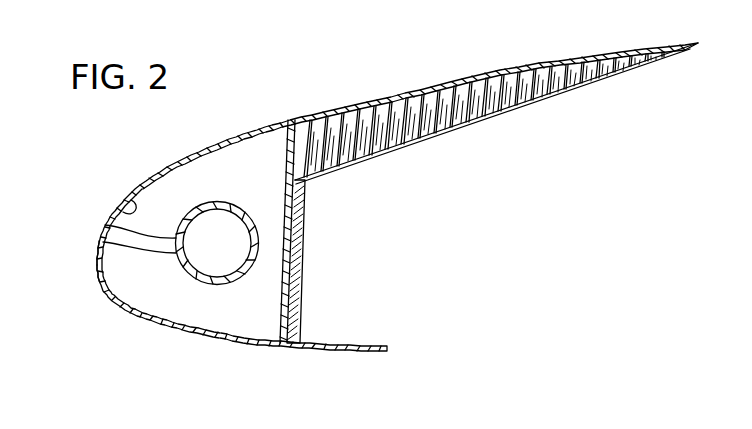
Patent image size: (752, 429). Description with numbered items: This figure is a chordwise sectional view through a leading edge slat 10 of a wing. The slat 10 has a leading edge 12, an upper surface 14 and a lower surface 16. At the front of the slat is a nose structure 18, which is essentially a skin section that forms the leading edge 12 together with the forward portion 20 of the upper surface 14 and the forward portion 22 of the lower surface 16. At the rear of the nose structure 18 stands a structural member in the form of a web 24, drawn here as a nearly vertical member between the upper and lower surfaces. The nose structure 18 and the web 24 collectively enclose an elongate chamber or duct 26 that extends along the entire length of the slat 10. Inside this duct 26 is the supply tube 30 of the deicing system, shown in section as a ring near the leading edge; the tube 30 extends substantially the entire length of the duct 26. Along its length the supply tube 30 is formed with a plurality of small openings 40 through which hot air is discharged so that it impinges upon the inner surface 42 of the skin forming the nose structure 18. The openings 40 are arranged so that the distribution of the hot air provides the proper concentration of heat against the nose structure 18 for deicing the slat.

The leading edge slat 10 is at (126, 159).
The leading edge 12 is at (97, 267).
The upper surface 14 is at (484, 69).
The lower surface 16 is at (257, 344).
The nose structure 18 is at (130, 189).
The forward portion of the upper surface 20 is at (269, 118).
The forward portion of the lower surface 22 is at (182, 331).
The web 24 is at (288, 168).
The duct 26 is at (130, 291).
The supply tube 30 is at (108, 222).
The openings 40 is at (103, 237).
The inner surface 42 is at (126, 204).